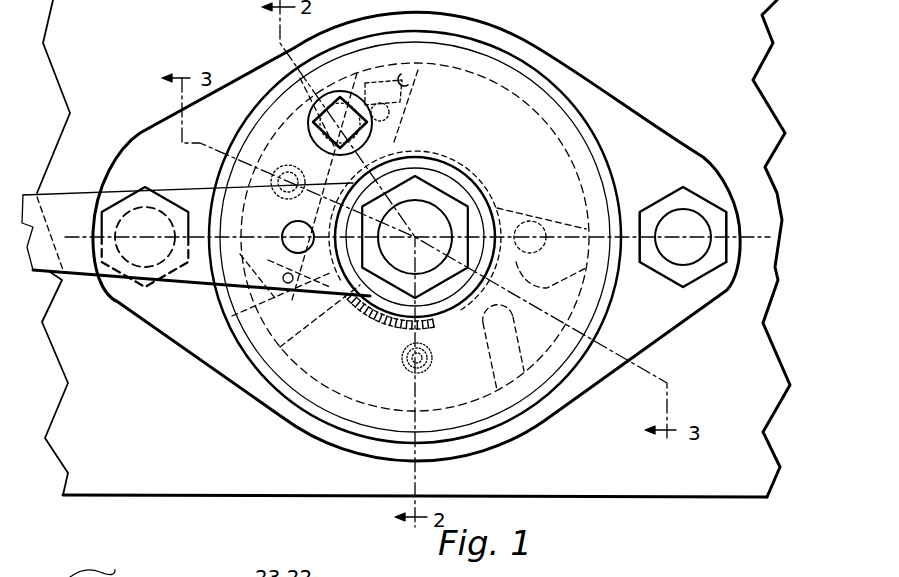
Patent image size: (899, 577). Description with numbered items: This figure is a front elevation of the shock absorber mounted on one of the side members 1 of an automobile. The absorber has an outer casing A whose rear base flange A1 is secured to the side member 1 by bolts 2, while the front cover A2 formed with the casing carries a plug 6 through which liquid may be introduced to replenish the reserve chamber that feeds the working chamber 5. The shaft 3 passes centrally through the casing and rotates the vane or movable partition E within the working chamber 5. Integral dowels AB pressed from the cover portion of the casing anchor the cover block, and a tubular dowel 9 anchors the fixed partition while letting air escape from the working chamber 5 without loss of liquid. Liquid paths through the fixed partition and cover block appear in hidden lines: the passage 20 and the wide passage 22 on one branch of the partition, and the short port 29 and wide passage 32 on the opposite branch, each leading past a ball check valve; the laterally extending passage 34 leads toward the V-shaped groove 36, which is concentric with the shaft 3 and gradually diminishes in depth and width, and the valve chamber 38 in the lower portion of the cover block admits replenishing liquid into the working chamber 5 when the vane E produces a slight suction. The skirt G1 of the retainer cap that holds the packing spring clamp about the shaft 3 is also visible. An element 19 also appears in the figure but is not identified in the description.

The side member 1 is at (569, 453).
The bolts 2 is at (155, 222).
The shaft 3 is at (440, 213).
The working chamber 5 is at (75, 253).
The plug 6 is at (340, 117).
The tubular dowel 9 is at (285, 180).
The pin 19 is at (533, 222).
The passage 20 is at (385, 135).
The wide passage 22 is at (409, 81).
The short port 29 is at (287, 284).
The wide passage 32 is at (262, 311).
The laterally extending passage 34 is at (337, 307).
The V-shaped groove 36 is at (398, 328).
The valve chamber 38 is at (408, 370).
The outer casing A is at (540, 83).
The rear base flange A1 is at (650, 122).
The front cover A2 is at (422, 217).
The integral dowels AB is at (284, 231).
The vane E is at (470, 362).
The skirt G1 is at (459, 307).